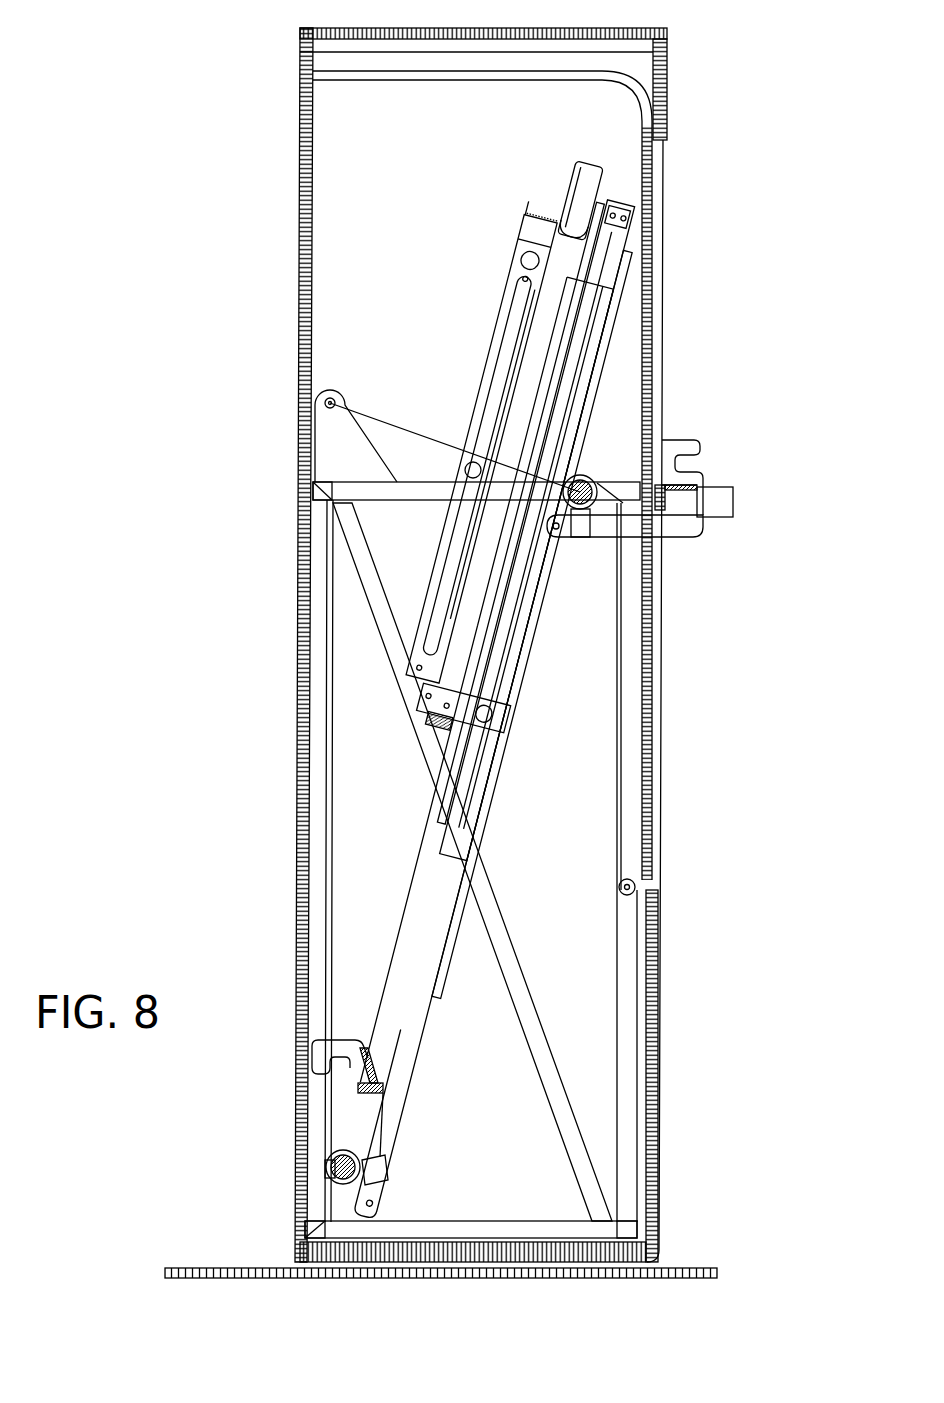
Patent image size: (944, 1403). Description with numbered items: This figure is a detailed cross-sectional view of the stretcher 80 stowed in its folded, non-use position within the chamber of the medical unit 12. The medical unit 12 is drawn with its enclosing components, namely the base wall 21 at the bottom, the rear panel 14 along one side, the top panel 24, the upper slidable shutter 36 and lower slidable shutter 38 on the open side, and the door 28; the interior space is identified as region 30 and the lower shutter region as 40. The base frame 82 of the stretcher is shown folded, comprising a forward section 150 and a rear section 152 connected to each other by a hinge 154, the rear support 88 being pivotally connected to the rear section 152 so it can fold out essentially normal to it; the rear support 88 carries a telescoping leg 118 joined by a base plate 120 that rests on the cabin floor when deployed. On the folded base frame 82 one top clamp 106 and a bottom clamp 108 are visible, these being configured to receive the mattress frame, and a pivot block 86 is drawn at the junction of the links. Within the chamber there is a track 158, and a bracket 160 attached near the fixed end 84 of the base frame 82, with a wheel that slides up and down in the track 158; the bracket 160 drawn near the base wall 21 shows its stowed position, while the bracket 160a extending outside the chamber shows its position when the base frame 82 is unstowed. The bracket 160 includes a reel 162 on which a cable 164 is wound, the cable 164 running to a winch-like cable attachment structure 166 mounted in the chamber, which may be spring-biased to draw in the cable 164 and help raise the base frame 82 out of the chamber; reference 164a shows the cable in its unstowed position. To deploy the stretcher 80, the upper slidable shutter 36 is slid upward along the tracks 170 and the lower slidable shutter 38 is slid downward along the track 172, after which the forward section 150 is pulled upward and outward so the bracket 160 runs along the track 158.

The medical unit 12 is at (180, 21).
The rear panel 14 is at (297, 802).
The base wall 21 is at (641, 1247).
The top panel 24 is at (638, 44).
The door 28 is at (300, 658).
The interior compartment 30 is at (372, 219).
The upper slidable shutter 36 is at (652, 244).
The lower slidable shutter 38 is at (652, 773).
The door lower portion 40 is at (656, 975).
The stretcher 80 is at (480, 348).
The base frame 82 is at (412, 870).
The fixed end 84 is at (390, 1040).
The pivot block 86 is at (437, 678).
The rear support 88 is at (520, 285).
The top clamp 106 is at (350, 1082).
The bottom clamp 108 is at (470, 722).
The telescoping leg 118 is at (532, 232).
The base plate 120 is at (527, 204).
The forward section 150 is at (398, 967).
The rear section 152 is at (545, 357).
The hinge 154 is at (600, 178).
The track 158 is at (487, 833).
The bracket 160 is at (380, 1137).
The bracket (unstowed position) 160a is at (683, 523).
The reel 162 is at (330, 1169).
The cable 164 is at (338, 906).
The cable (unstowed position) 164a is at (420, 440).
The cable attachment structure 166 is at (320, 434).
The tracks 170 is at (330, 84).
The track 172 is at (648, 1050).